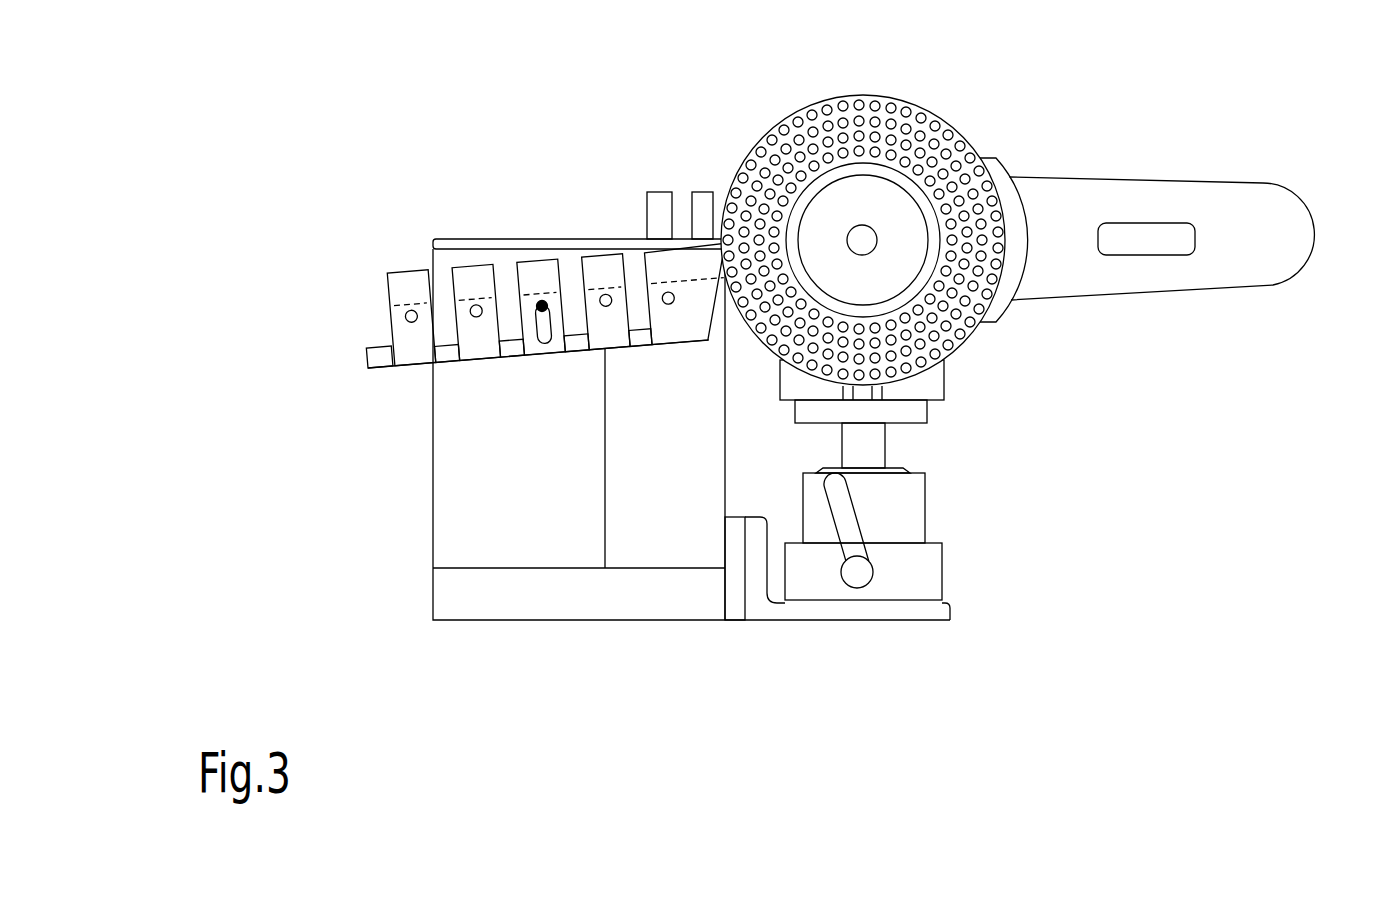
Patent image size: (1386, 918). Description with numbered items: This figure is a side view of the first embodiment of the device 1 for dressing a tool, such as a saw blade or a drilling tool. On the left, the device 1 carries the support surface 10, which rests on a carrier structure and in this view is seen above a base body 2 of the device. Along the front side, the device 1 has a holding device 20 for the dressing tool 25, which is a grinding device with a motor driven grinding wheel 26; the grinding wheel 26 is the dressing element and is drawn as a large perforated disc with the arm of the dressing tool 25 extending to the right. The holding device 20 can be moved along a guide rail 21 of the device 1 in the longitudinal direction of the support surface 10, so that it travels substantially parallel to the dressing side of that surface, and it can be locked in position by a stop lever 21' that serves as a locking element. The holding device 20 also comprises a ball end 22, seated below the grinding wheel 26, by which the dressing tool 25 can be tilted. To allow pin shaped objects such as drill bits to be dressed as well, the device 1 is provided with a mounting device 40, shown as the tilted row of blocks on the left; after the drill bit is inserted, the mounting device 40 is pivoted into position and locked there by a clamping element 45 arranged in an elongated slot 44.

The device 1 is at (432, 232).
The base body 2 is at (691, 434).
The support surface 10 is at (598, 222).
The holding device 20 is at (968, 545).
The guide rail 21 is at (837, 639).
The stop lever 21' is at (968, 605).
The ball end 22 is at (887, 470).
The dressing tool 25 is at (1133, 215).
The grinding wheel 26 is at (937, 141).
The mounting device 40 is at (408, 376).
The elongated slot 44 is at (547, 343).
The clamping element 45 is at (542, 306).